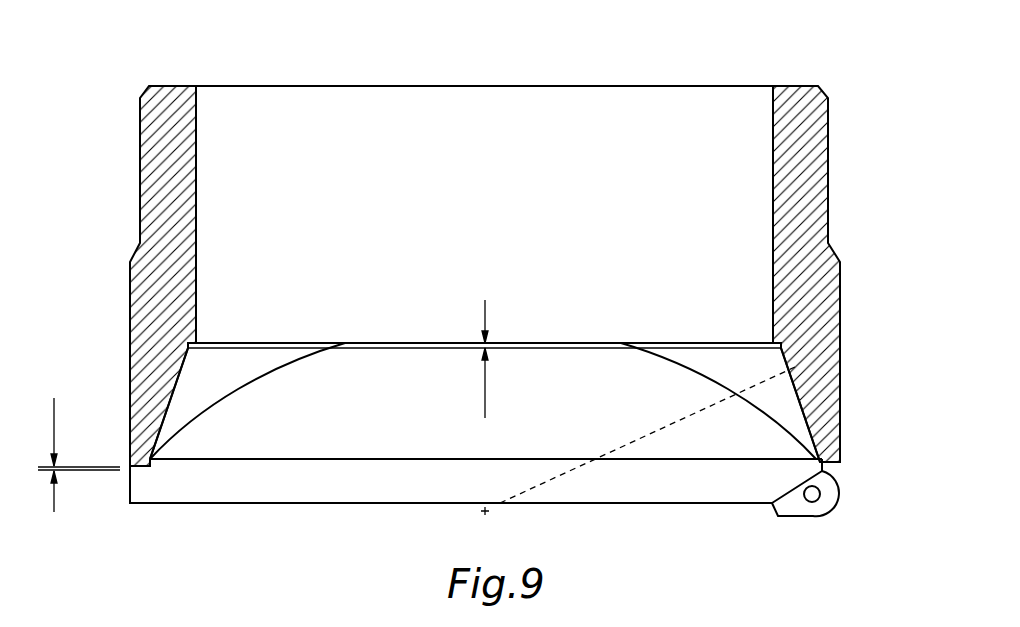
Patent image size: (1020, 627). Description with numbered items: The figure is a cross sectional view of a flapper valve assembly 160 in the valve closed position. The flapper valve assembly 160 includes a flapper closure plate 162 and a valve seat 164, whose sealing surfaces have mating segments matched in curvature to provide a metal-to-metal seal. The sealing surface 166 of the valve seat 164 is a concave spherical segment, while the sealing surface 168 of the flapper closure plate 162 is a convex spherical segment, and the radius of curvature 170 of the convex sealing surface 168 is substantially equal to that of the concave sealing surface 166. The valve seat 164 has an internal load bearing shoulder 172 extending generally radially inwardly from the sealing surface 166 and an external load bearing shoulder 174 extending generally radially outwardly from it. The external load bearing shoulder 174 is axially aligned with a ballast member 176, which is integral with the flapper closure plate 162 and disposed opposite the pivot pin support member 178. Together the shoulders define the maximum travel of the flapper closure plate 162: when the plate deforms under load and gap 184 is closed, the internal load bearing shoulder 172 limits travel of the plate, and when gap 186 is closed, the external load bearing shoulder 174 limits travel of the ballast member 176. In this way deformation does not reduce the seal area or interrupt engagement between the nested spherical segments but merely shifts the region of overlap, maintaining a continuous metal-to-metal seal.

The flapper valve assembly 160 is at (625, 58).
The flapper closure plate 162 is at (673, 492).
The valve seat 164 is at (168, 103).
The sealing surface 166 is at (173, 376).
The sealing surface 168 is at (167, 398).
The radius of curvature 170 is at (630, 445).
The internal load bearing shoulder 172 is at (196, 340).
The external load bearing shoulder 174 is at (141, 432).
The ballast member 176 is at (130, 487).
The pivot pin support member 178 is at (811, 507).
The gap 184 is at (486, 347).
The gap 186 is at (78, 469).